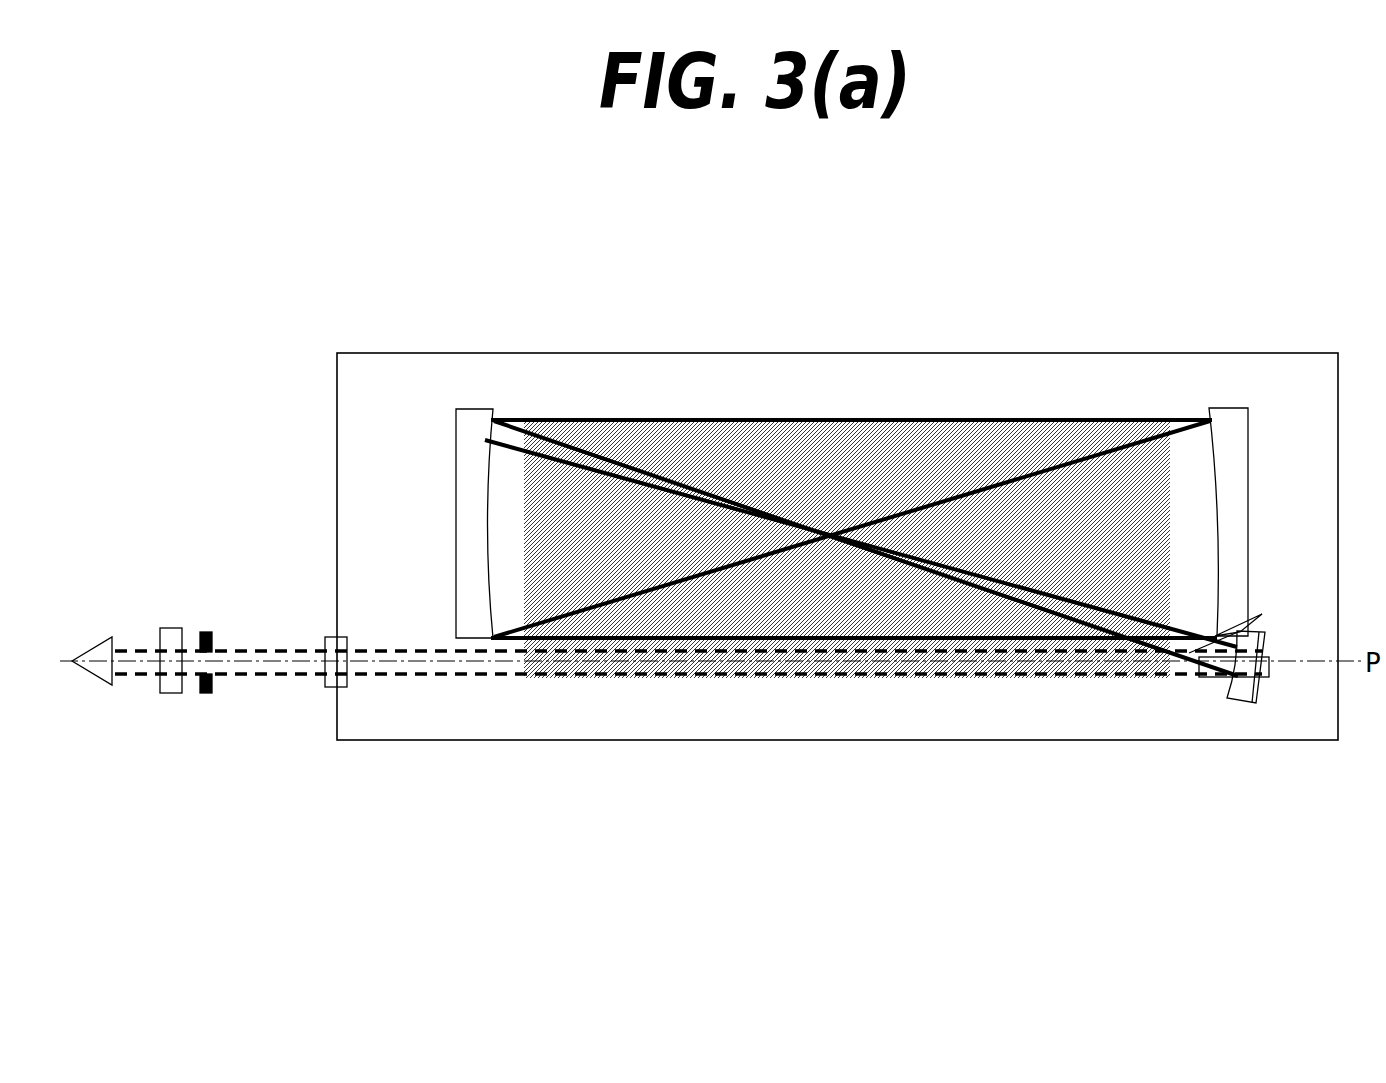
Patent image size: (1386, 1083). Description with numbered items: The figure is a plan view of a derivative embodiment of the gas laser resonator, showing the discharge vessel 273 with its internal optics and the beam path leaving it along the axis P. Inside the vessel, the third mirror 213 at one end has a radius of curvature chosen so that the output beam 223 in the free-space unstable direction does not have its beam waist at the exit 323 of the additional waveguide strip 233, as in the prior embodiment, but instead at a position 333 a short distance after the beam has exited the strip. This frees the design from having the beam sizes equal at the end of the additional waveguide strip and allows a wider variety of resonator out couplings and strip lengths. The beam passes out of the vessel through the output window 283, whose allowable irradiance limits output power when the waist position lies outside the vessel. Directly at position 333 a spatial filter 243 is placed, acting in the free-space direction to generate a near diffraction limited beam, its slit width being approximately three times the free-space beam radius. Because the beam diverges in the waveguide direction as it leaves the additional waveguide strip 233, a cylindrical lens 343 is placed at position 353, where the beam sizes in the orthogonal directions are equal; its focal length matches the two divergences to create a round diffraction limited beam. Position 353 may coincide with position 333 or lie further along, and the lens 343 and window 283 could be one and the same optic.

The third mirror 213 is at (1257, 695).
The output beam 223 is at (402, 662).
The additional waveguide strip 233 is at (545, 642).
The spatial filter 243 is at (210, 688).
The housing 273 is at (1173, 353).
The output window 283 is at (326, 680).
The exit of the additional waveguide strip 323 is at (524, 678).
The position of beam waist 333 is at (205, 693).
The cylindrical lens 343 is at (170, 628).
The position of cylindrical lens 353 is at (171, 693).